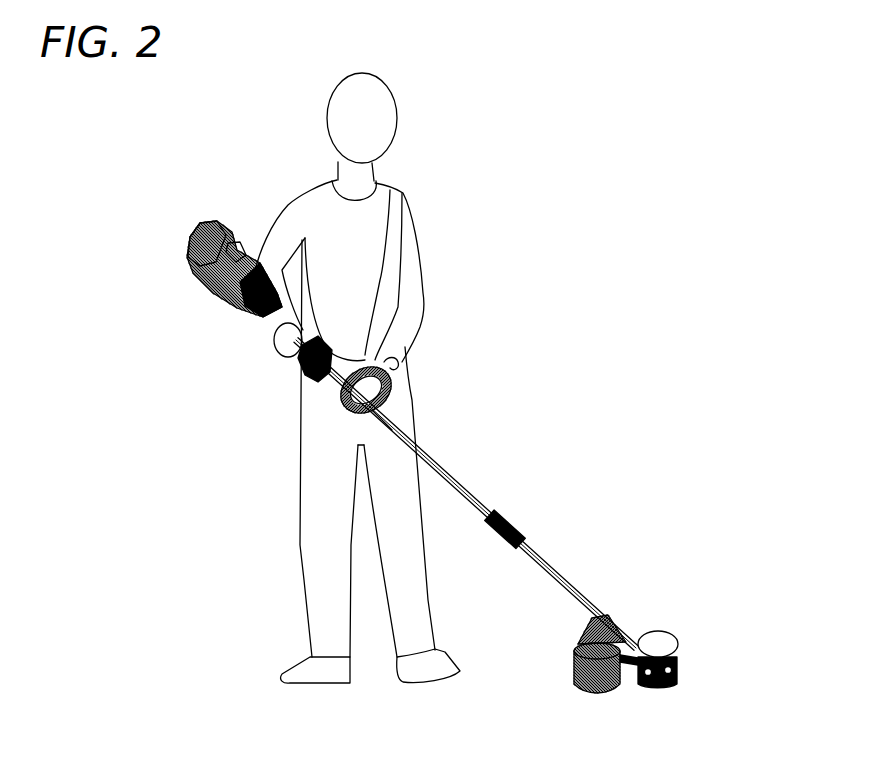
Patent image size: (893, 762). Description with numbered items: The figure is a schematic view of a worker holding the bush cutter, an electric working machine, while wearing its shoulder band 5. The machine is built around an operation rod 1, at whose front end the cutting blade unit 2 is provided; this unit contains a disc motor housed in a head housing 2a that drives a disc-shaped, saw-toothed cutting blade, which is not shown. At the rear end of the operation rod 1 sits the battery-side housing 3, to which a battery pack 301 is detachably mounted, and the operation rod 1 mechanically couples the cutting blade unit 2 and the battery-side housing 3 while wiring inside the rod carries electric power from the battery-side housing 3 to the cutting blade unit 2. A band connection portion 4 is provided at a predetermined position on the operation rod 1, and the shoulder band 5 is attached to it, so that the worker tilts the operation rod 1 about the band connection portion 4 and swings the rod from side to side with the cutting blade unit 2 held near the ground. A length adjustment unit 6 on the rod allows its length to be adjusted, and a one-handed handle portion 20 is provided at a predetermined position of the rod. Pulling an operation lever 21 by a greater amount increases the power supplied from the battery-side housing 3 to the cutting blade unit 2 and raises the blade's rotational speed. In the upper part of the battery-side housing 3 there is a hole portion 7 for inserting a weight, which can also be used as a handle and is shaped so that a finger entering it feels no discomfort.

The operation rod 1 is at (478, 503).
The cutting blade unit 2 is at (665, 631).
The head housing 2a is at (676, 641).
The battery-side housing 3 is at (212, 277).
The battery pack 301 is at (190, 250).
The band connection portion 4 is at (350, 368).
The shoulder band 5 is at (396, 230).
The length adjustment unit 6 is at (506, 519).
The hole portion 7 is at (238, 255).
The handle portion 20 is at (393, 365).
The operation lever 21 is at (285, 353).